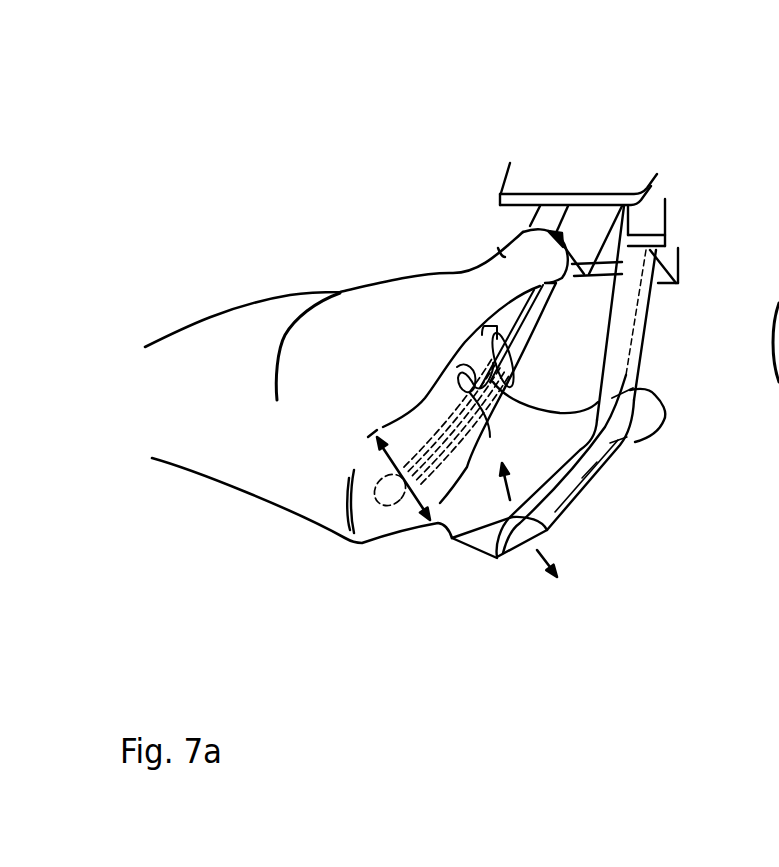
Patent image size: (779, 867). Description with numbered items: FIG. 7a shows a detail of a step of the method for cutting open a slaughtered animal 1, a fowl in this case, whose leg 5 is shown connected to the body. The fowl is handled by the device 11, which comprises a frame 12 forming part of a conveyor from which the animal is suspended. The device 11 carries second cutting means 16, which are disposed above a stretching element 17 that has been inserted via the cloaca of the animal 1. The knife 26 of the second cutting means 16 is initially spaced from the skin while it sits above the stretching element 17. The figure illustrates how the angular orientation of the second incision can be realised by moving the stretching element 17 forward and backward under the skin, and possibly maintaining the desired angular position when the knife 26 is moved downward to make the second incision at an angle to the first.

The slaughtered animal 1 is at (188, 269).
The leg 5 is at (385, 313).
The device 11 is at (563, 366).
The frame 12 is at (620, 182).
The second cutting means 16 is at (600, 477).
The stretching element 17 is at (378, 495).
The knife 26 is at (485, 545).